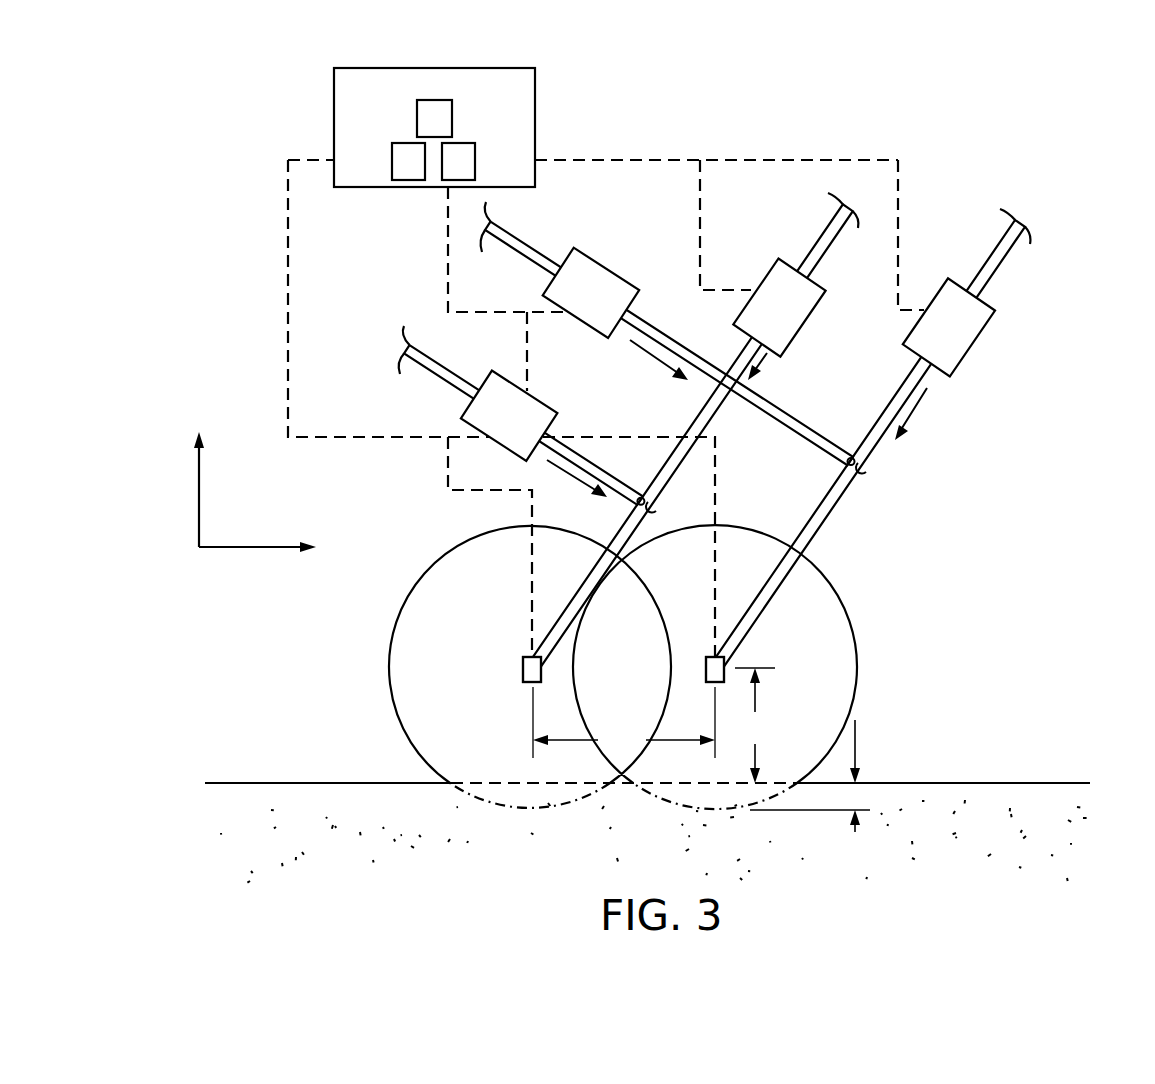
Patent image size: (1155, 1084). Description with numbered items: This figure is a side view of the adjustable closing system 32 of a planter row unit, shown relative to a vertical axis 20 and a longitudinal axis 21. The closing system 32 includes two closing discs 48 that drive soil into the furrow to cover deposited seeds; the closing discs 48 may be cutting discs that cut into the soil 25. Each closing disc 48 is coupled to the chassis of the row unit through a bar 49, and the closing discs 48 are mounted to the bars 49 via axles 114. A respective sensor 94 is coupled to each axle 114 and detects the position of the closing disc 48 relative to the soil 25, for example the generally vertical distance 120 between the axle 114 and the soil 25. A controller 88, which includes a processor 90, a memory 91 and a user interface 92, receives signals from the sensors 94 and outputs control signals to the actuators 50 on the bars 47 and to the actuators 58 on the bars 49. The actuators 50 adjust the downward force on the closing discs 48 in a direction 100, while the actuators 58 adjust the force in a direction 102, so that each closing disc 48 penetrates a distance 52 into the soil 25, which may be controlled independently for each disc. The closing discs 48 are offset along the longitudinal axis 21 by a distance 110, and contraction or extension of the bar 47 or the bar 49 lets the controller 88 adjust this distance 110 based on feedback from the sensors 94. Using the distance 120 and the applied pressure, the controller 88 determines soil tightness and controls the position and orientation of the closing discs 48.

The vertical axis 20 is at (199, 493).
The longitudinal axis 21 is at (244, 547).
The soil 25 is at (529, 869).
The adjustable closing system 32 is at (1033, 168).
The bar 47 is at (450, 363).
The closing disc 48 is at (417, 687).
The bar 49 is at (832, 242).
The actuator 50 is at (503, 442).
The distance 52 is at (858, 745).
The shank actuator 58 is at (761, 275).
The controller 88 is at (398, 187).
The processor 90 is at (392, 160).
The memory 91 is at (475, 160).
The user interface 92 is at (452, 120).
The sensor 94 is at (530, 656).
The direction 100 is at (578, 476).
The direction 102 is at (770, 370).
The longitudinal distance 110 is at (624, 722).
The axle 114 is at (527, 683).
The vertical distance 120 is at (755, 725).